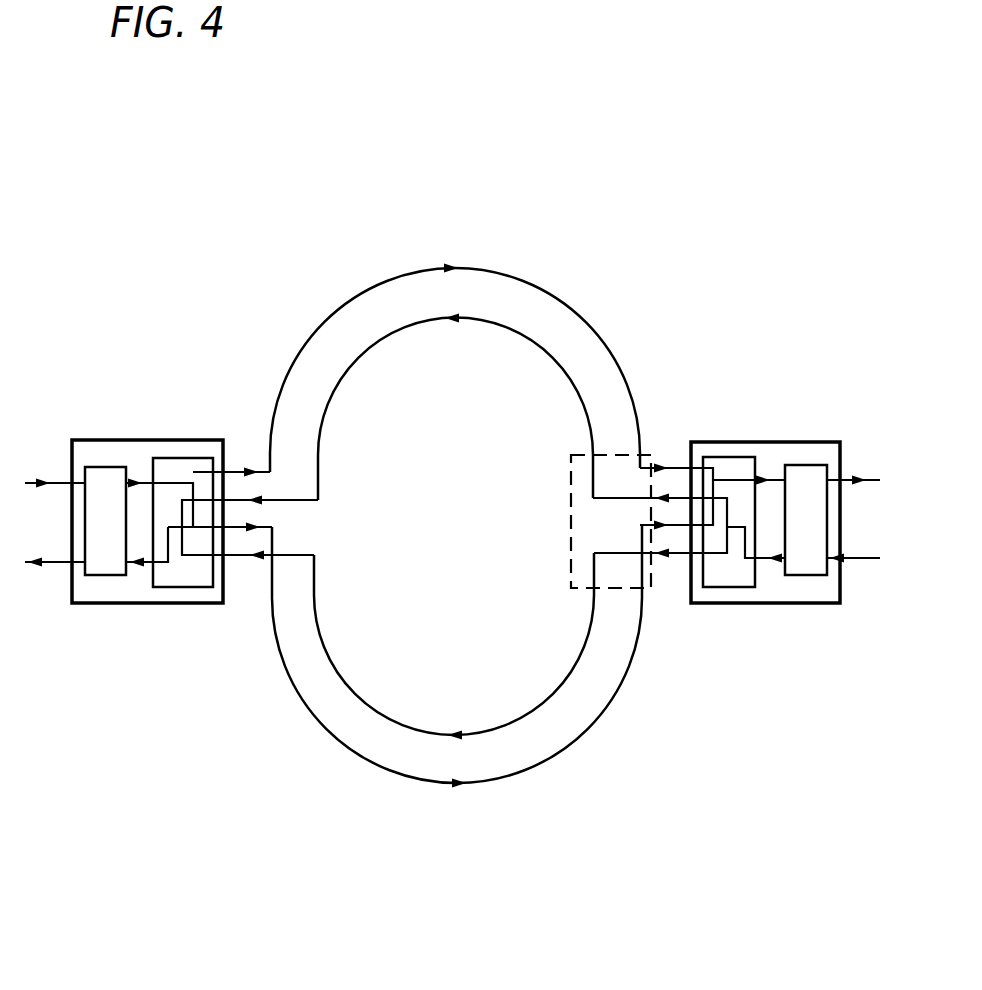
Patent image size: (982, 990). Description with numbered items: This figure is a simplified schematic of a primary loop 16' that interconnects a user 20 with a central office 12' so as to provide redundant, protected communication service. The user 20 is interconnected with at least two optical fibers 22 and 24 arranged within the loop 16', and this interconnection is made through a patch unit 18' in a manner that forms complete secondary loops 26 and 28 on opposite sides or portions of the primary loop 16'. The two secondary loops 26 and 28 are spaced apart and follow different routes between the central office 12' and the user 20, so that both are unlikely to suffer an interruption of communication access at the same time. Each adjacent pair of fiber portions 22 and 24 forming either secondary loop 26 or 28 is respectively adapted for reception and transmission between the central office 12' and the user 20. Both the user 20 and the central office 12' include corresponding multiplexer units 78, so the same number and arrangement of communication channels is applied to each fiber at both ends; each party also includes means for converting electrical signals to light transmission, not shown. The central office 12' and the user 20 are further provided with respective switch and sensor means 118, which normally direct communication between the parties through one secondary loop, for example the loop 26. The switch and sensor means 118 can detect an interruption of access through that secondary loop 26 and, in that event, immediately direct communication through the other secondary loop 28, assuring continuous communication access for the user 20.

The central office 12' is at (171, 505).
The primary loop 16' is at (480, 531).
The patch unit 18' is at (579, 517).
The user 20 is at (788, 442).
The optical fiber 22 is at (321, 327).
The optical fiber 24 is at (380, 341).
The secondary loop 26 is at (438, 352).
The secondary loop 28 is at (425, 712).
The multiplexer unit 78 is at (113, 577).
The switch and sensor means 118 is at (173, 575).